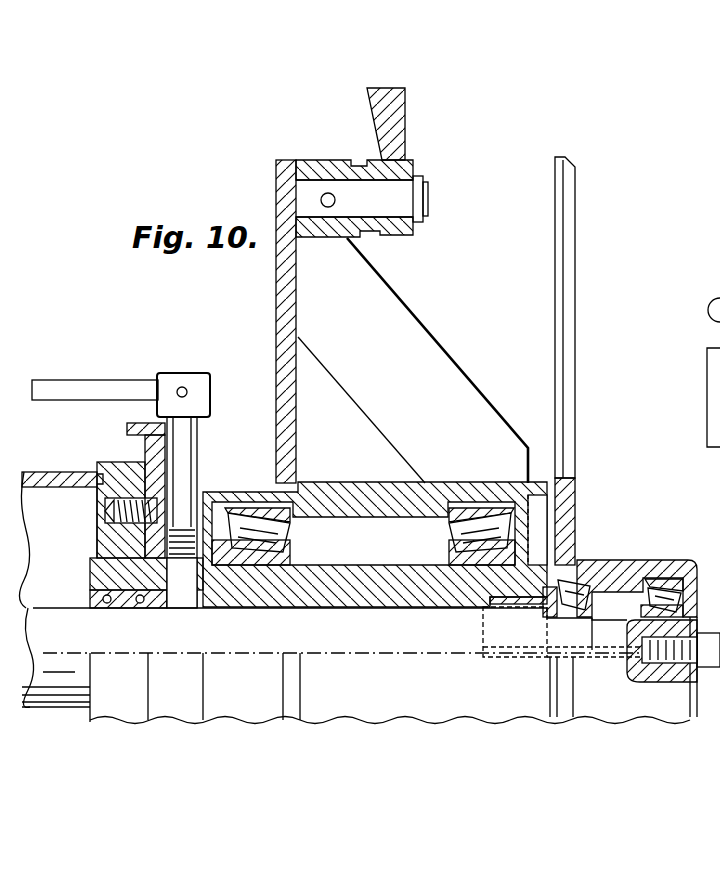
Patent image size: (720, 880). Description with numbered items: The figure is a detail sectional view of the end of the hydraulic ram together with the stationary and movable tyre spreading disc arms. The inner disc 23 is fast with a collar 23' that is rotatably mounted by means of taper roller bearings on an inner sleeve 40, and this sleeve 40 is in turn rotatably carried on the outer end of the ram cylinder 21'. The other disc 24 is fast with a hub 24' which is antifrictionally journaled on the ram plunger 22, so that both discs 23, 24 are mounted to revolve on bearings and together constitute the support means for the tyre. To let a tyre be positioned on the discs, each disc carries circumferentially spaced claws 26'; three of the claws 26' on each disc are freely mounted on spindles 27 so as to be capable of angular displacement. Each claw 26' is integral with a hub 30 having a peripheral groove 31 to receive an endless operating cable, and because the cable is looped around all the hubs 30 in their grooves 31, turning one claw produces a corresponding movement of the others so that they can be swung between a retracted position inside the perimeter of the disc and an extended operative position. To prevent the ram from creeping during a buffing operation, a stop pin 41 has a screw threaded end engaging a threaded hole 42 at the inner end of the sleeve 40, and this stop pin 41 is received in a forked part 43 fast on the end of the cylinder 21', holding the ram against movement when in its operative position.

The claw 26' is at (412, 124).
The hub 30 is at (360, 164).
The spindle 27 is at (405, 206).
The peripheral groove 31 is at (366, 238).
The inner disc 23 is at (381, 321).
The disc 24 is at (588, 361).
The collar 23' is at (375, 532).
The sleeve 40 is at (426, 552).
The hub 24' is at (631, 623).
The ram plunger 22 is at (430, 646).
The ram cylinder 21' is at (61, 523).
The forked part 43 is at (143, 424).
The stop pin 41 is at (183, 483).
The threaded hole 42 is at (167, 570).